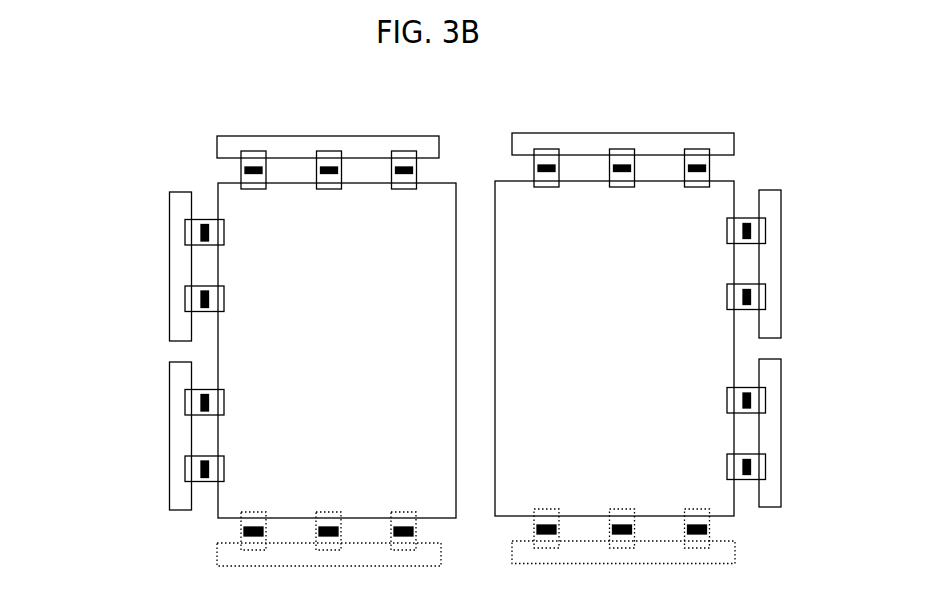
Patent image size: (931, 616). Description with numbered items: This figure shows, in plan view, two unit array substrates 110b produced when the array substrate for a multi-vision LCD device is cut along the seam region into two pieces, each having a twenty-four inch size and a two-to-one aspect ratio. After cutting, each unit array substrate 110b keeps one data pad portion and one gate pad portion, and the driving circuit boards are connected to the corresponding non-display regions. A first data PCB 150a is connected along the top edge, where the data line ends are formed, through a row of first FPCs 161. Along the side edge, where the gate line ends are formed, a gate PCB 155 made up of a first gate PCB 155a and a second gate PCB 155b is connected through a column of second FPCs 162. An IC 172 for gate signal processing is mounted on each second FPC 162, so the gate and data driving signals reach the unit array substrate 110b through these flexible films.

The first data PCB 150a is at (380, 141).
The first FPC 161 is at (252, 153).
The unit array substrate 110b is at (743, 185).
The second FPC 162 is at (186, 229).
The gate PCB 155 is at (116, 351).
The first gate PCB 155a is at (177, 309).
The second gate PCB 155b is at (177, 372).
The IC for gate signal processing 172 is at (186, 465).